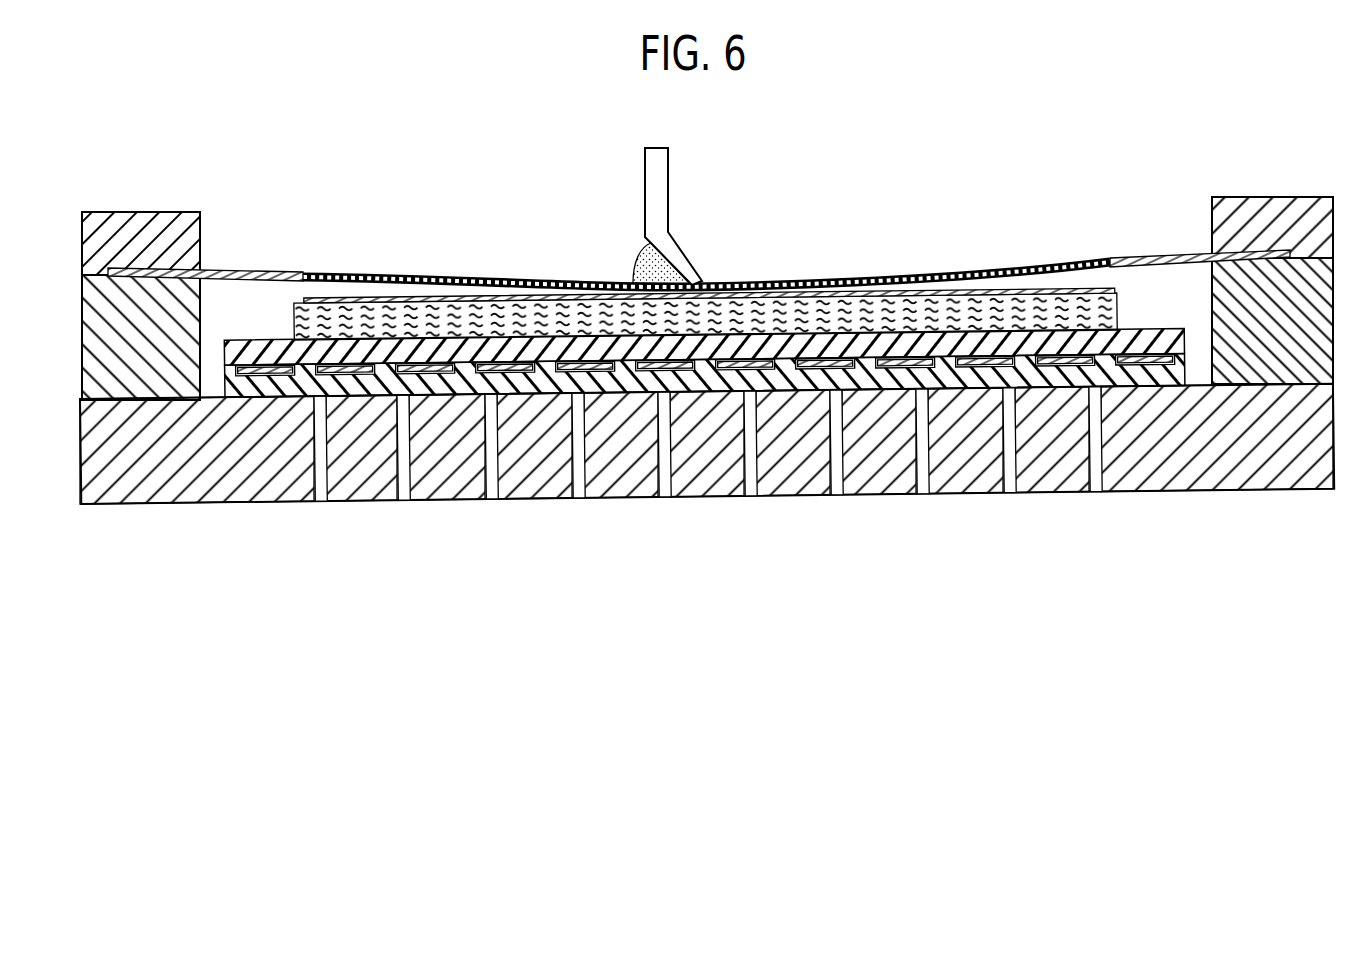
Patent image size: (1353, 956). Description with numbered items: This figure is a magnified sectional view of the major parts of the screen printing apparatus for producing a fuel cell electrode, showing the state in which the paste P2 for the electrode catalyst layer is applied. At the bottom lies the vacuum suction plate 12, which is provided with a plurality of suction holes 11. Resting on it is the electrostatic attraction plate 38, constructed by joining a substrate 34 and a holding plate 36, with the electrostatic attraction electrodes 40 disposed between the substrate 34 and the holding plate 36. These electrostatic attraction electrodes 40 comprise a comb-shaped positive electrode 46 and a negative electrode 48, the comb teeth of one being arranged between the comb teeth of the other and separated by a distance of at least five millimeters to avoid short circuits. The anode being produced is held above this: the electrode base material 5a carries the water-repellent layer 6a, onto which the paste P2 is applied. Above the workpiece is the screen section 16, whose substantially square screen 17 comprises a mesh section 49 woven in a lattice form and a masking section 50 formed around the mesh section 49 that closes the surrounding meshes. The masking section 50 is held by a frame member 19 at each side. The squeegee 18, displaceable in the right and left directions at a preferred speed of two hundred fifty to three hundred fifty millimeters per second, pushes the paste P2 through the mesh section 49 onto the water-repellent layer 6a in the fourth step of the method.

The electrode base material 5a is at (980, 310).
The water-repellent layer 6a is at (442, 297).
The suction holes 11 is at (315, 483).
The vacuum suction plate 12 is at (135, 470).
The screen section 16 is at (1265, 235).
The screen 17 is at (1157, 258).
The squeegee 18 is at (662, 188).
The frame member 19 is at (140, 236).
The substrate 34 is at (438, 383).
The holding plate 36 is at (545, 348).
The electrostatic attraction plate 38 is at (704, 467).
The electrostatic attraction electrodes 40 is at (705, 473).
The positive electrode 46 is at (1147, 350).
The negative electrode 48 is at (1060, 353).
The mesh section 49 is at (368, 276).
The masking section 50 is at (240, 268).
The paste P2 is at (646, 259).